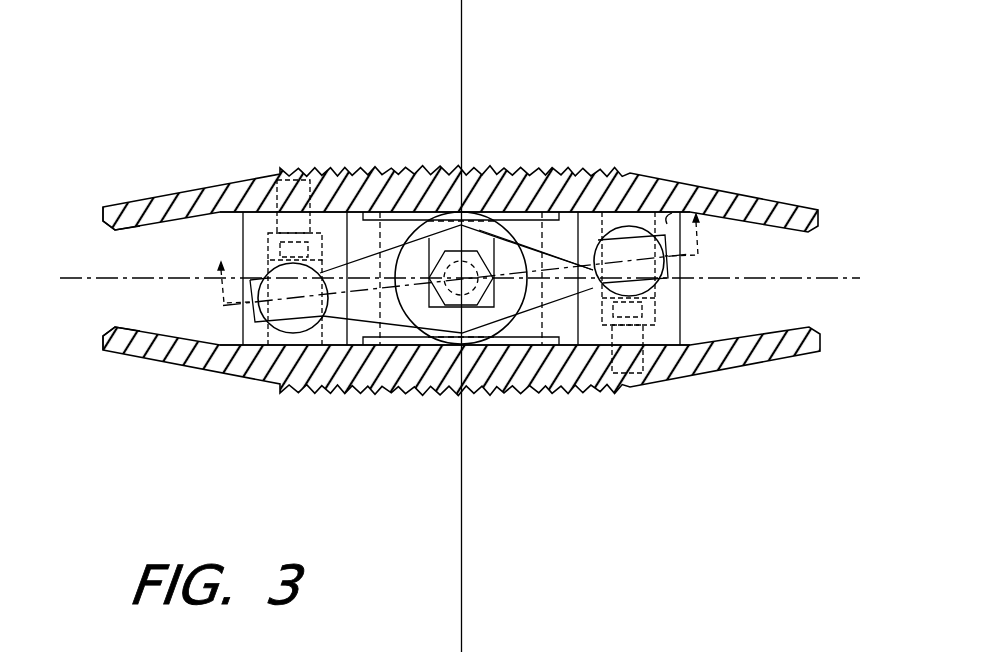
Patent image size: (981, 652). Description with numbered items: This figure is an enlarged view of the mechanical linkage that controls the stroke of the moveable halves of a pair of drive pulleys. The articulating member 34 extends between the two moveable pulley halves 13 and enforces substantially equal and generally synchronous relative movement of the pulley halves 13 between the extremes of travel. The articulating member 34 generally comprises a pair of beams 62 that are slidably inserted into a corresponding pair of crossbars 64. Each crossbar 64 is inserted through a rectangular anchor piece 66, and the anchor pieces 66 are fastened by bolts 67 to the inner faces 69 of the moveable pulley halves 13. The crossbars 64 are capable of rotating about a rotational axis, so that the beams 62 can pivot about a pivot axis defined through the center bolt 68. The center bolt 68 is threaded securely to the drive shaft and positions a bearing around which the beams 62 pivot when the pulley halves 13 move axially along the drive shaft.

The moveable pulley half 13 is at (813, 209).
The articulating member 34 is at (566, 157).
The beam 62 is at (370, 308).
The crossbar 64 is at (673, 213).
The anchor piece 66 is at (663, 328).
The bolt 67 is at (299, 188).
The center bolt 68 is at (476, 303).
The inner face 69 is at (143, 226).